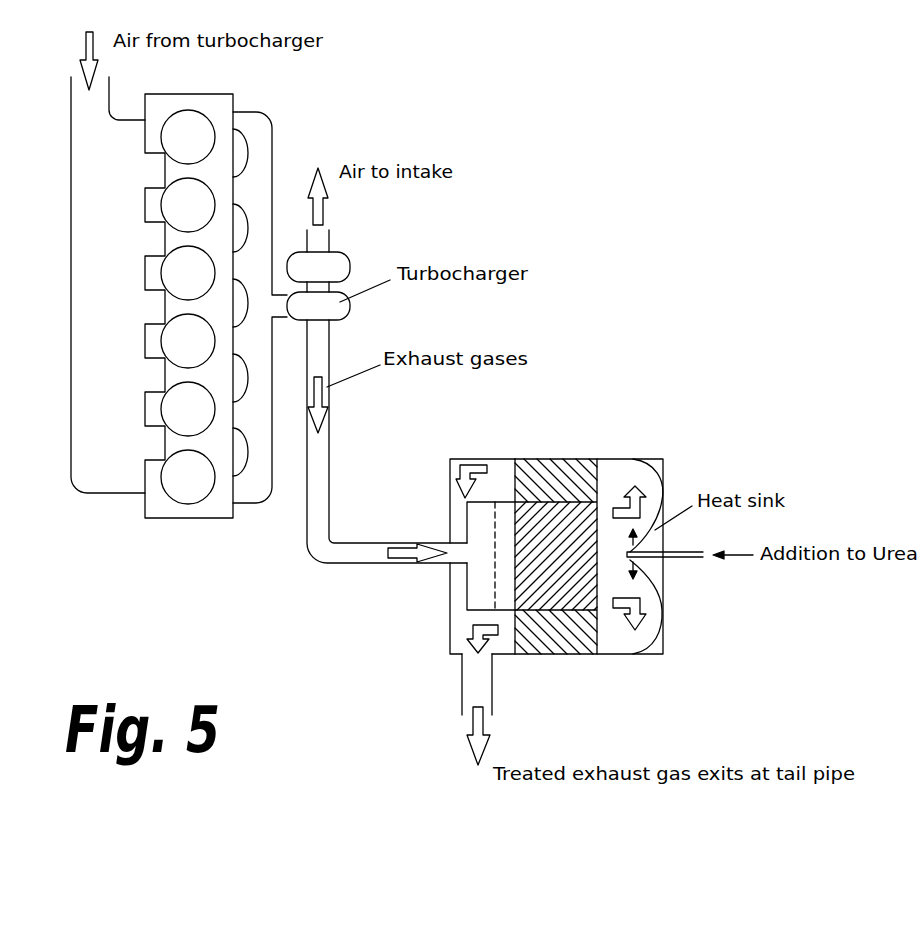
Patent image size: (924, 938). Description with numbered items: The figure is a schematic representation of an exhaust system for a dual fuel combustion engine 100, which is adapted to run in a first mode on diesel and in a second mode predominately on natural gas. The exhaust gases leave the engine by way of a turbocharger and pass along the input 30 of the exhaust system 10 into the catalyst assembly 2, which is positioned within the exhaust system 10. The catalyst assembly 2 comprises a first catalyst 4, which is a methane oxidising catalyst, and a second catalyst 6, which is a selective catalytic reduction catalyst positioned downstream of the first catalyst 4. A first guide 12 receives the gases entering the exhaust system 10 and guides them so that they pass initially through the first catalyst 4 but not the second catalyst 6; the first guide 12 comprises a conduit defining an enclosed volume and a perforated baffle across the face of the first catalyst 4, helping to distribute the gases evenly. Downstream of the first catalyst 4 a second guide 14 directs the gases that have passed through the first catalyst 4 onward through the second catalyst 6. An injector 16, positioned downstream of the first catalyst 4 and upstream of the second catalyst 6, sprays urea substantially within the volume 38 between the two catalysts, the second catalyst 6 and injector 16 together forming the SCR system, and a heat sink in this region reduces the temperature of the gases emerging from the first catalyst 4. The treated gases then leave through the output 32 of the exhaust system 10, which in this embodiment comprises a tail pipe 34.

The dual fuel combustion engine 100 is at (207, 518).
The input 30 is at (322, 480).
The catalyst assembly 2 is at (537, 655).
The exhaust system 10 is at (498, 458).
The selective catalytic reduction (SCR) catalyst 6 is at (570, 458).
The first catalyst 4 is at (528, 582).
The first guide 12 is at (470, 517).
The volume 38 is at (628, 481).
The second guide 14 is at (655, 512).
The injector 16 is at (692, 562).
The output 32 is at (470, 682).
The tail pipe 34 is at (492, 708).